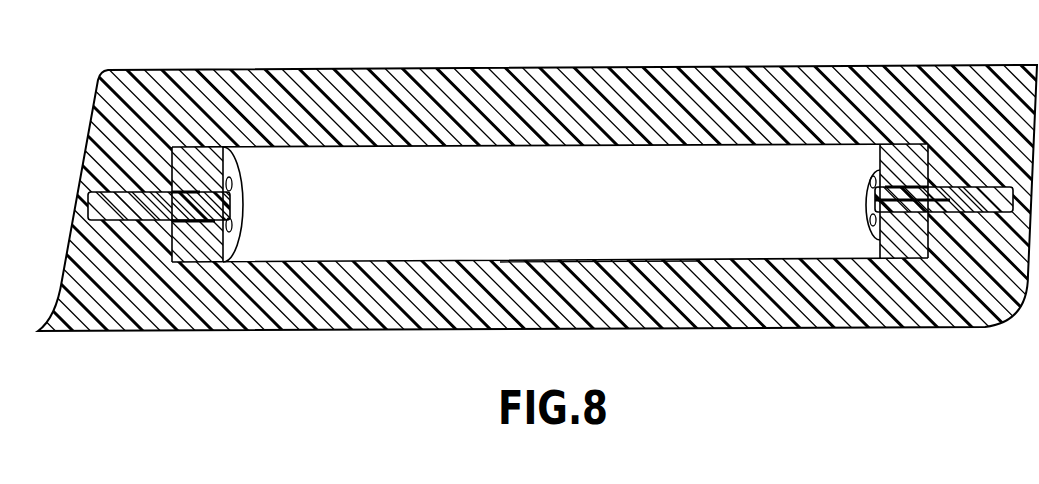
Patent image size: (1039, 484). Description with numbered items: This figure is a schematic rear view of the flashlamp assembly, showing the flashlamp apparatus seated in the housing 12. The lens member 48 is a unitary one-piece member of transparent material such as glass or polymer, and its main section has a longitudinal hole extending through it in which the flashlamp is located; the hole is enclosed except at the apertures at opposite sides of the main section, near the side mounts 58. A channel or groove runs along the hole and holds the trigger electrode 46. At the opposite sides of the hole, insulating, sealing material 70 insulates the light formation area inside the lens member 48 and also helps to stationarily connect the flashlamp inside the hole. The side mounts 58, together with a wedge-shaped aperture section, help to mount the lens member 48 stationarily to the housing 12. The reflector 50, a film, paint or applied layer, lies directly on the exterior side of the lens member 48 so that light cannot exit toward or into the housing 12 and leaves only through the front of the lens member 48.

The housing 12 is at (123, 83).
The trigger electrode 46 is at (930, 143).
The lens member 48 is at (692, 222).
The reflector 50 is at (793, 182).
The side mounts 58 is at (208, 258).
The insulating, sealing material 70 is at (262, 160).